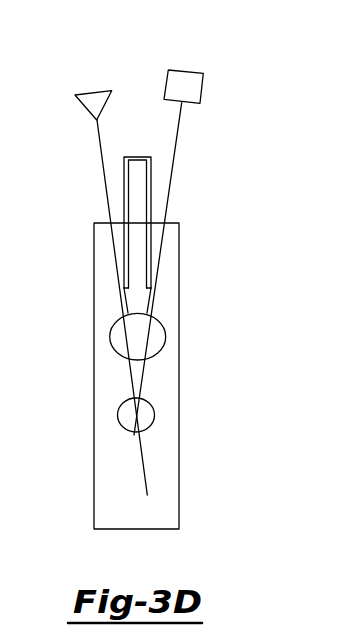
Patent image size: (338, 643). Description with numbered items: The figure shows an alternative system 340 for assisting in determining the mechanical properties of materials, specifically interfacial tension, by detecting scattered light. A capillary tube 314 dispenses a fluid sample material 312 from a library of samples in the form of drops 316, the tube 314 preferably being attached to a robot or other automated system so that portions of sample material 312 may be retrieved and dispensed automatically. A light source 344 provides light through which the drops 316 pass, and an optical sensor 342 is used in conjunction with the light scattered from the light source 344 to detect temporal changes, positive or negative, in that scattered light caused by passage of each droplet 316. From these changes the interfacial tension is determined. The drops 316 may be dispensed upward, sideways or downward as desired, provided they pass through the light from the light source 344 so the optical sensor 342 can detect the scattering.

The alternative system 340 is at (208, 147).
The optical sensor 342 is at (193, 70).
The light source 344 is at (92, 93).
The fluid sample material 312 is at (138, 205).
The capillary tube 314 is at (124, 193).
The drops 316 is at (155, 415).